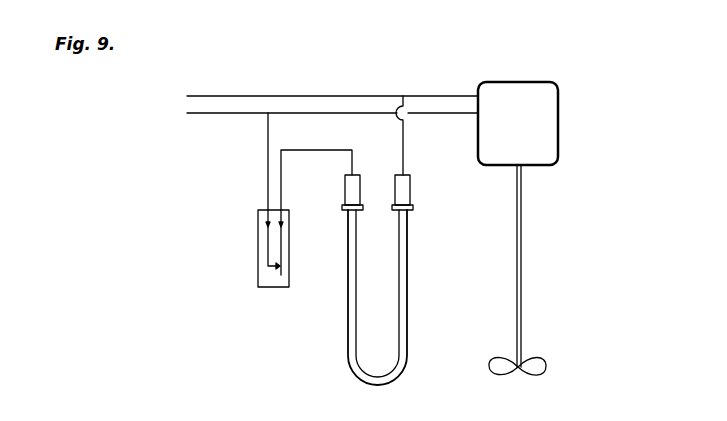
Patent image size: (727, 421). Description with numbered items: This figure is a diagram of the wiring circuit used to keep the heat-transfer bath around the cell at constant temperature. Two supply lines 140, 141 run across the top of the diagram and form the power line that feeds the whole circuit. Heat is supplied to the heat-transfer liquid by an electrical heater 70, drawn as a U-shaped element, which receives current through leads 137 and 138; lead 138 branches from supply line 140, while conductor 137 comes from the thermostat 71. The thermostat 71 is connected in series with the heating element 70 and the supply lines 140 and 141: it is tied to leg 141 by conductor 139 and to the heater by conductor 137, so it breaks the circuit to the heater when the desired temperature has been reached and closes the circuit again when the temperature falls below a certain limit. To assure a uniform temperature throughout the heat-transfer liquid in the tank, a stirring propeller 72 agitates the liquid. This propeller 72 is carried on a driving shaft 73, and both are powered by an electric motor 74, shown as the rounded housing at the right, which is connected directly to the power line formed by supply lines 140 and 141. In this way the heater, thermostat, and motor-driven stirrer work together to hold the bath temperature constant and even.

The electrical heater 70 is at (407, 311).
The thermostat 71 is at (270, 288).
The stirring propeller 72 is at (545, 366).
The driving shaft 73 is at (523, 262).
The electric motor 74 is at (559, 127).
The conductor 137 is at (318, 148).
The lead 138 is at (405, 147).
The conductor 139 is at (268, 176).
The supply line 140 is at (250, 96).
The supply line 141 is at (241, 114).